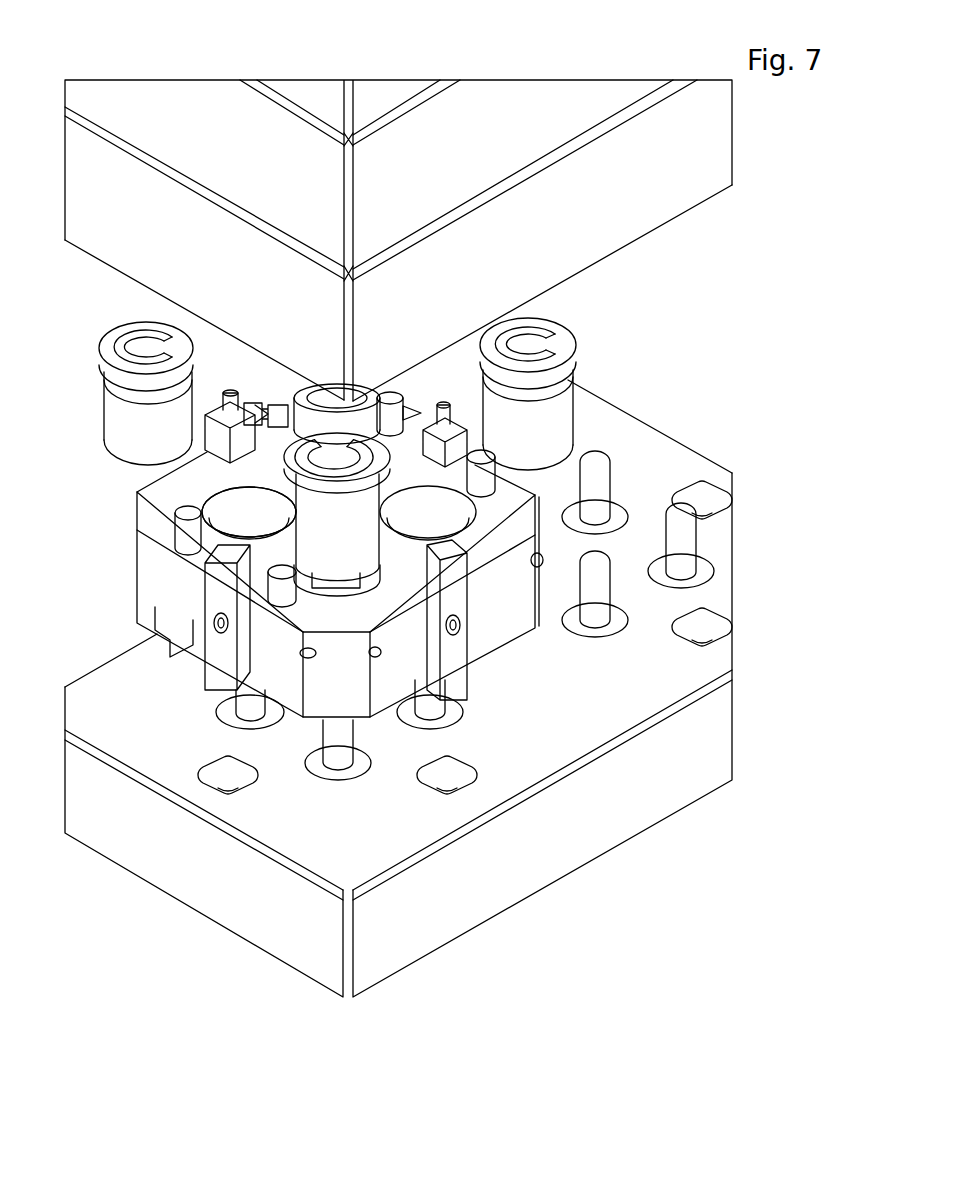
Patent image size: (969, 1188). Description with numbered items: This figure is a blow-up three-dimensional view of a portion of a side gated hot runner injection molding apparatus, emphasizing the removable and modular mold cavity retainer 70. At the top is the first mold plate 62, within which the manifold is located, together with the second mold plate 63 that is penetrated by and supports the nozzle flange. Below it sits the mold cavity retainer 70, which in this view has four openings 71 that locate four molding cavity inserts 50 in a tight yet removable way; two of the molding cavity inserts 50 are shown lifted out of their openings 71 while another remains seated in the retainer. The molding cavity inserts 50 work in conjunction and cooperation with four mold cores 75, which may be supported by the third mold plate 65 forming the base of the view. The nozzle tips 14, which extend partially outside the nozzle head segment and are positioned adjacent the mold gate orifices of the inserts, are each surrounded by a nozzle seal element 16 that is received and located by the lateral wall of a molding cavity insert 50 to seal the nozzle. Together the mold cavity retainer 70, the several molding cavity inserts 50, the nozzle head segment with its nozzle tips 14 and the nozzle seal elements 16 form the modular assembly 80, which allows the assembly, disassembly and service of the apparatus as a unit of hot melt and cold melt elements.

The nozzle tip 14 is at (412, 418).
The nozzle seal element 16 is at (448, 412).
The molding cavity insert 50 is at (133, 418).
The first mold plate 62 is at (455, 140).
The second mold plate 63 is at (503, 253).
The third mold plate 65 is at (547, 852).
The mold cavity retainer 70 is at (505, 607).
The opening 71 is at (237, 527).
The mold core 75 is at (595, 463).
The modular assembly 80 is at (719, 291).